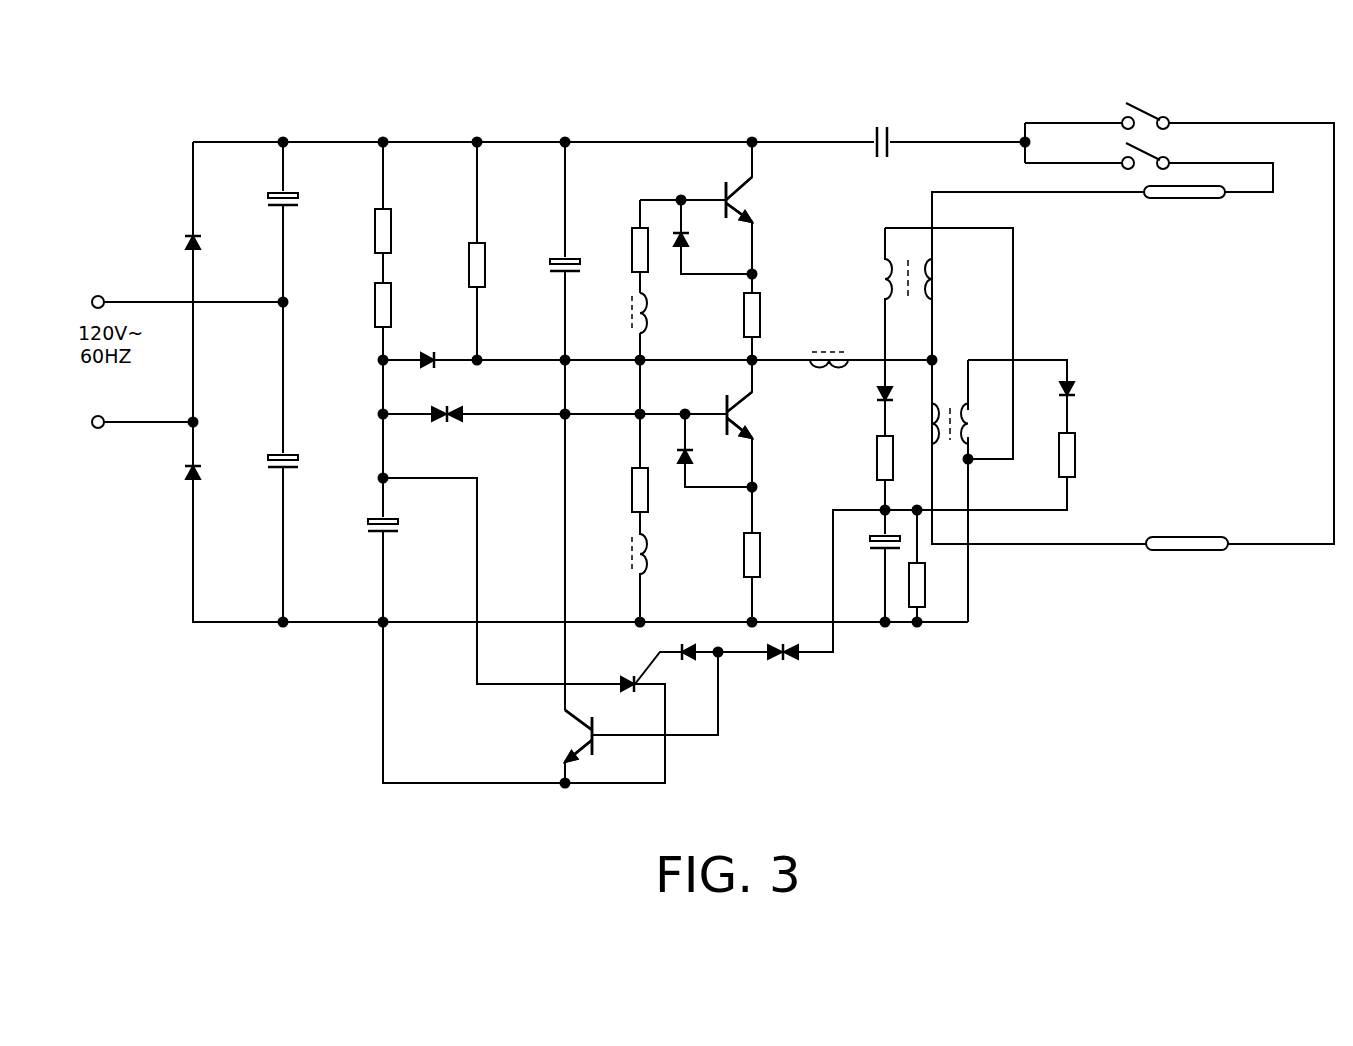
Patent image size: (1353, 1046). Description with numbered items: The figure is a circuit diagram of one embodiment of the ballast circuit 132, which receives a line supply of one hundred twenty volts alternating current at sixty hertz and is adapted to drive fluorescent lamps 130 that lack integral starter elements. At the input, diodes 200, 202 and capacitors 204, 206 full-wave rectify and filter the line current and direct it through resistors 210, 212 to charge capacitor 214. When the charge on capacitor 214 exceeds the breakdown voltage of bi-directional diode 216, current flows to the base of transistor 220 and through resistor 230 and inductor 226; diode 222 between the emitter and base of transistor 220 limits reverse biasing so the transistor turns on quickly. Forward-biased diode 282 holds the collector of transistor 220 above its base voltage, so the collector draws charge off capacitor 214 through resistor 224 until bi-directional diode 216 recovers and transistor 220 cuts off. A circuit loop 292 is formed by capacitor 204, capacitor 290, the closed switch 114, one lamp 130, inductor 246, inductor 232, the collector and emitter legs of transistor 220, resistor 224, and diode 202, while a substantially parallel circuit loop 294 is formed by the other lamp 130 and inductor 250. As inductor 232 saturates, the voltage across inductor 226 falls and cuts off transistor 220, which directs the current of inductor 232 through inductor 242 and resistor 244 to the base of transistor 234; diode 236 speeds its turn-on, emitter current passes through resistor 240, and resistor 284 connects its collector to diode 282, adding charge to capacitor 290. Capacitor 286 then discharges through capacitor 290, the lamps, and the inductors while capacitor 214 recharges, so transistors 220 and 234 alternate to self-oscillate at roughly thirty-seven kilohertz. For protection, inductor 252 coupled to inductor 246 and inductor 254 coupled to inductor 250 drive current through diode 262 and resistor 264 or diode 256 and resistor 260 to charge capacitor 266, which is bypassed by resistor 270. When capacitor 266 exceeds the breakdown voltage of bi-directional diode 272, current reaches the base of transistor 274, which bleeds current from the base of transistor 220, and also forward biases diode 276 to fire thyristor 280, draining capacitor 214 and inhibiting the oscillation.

The switch 114 is at (1144, 104).
The fluorescent lamp 130 is at (1178, 200).
The ballast circuit 132 is at (1066, 710).
The diode 200 is at (185, 242).
The diode 202 is at (185, 472).
The capacitor 204 is at (265, 200).
The capacitor 206 is at (265, 463).
The resistor 210 is at (374, 243).
The resistor 212 is at (374, 310).
The capacitor 214 is at (366, 527).
The bi-directional diode 216 is at (455, 424).
The transistor 220 is at (740, 418).
The diode 222 is at (694, 452).
The resistor 224 is at (761, 562).
The inductor 226 is at (652, 562).
The resistor 230 is at (632, 488).
The inductor 232 is at (826, 352).
The transistor 234 is at (740, 206).
The diode 236 is at (690, 238).
The resistor 240 is at (761, 322).
The inductor 242 is at (650, 316).
The resistor 244 is at (636, 228).
The inductor 246 is at (942, 278).
The inductor 250 is at (922, 421).
The inductor 252 is at (878, 280).
The inductor 254 is at (978, 428).
The diode 256 is at (1078, 396).
The resistor 260 is at (1077, 455).
The diode 262 is at (875, 396).
The resistor 264 is at (876, 470).
The capacitor 266 is at (876, 536).
The resistor 270 is at (928, 600).
The bi-directional diode 272 is at (790, 664).
The transistor 274 is at (598, 742).
The diode 276 is at (682, 648).
The thyristor 280 is at (624, 678).
The diode 282 is at (430, 350).
The resistor 284 is at (468, 284).
The capacitor 286 is at (548, 268).
The capacitor 290 is at (880, 125).
The circuit loop 292 is at (1270, 245).
The circuit loop 294 is at (1336, 570).